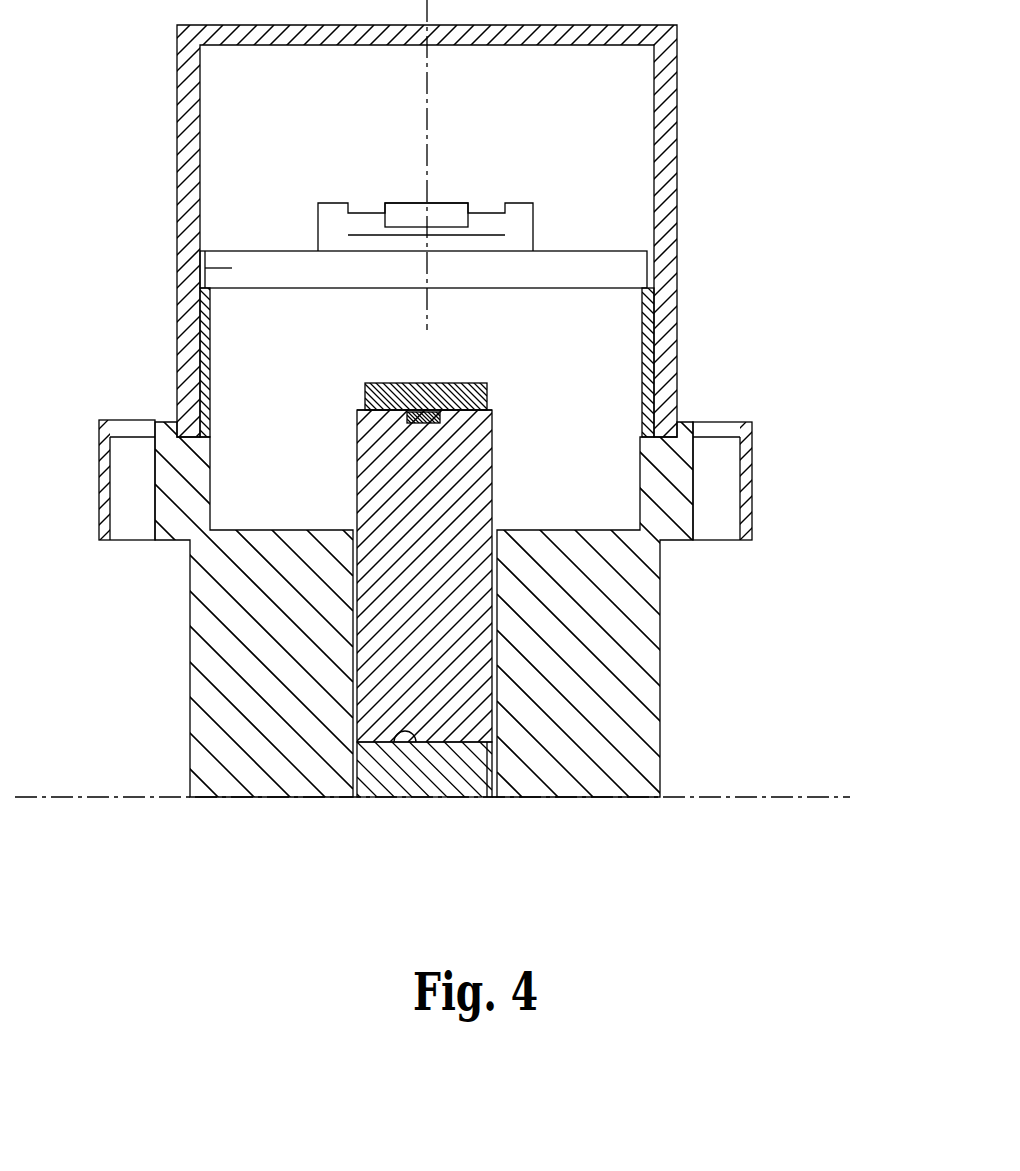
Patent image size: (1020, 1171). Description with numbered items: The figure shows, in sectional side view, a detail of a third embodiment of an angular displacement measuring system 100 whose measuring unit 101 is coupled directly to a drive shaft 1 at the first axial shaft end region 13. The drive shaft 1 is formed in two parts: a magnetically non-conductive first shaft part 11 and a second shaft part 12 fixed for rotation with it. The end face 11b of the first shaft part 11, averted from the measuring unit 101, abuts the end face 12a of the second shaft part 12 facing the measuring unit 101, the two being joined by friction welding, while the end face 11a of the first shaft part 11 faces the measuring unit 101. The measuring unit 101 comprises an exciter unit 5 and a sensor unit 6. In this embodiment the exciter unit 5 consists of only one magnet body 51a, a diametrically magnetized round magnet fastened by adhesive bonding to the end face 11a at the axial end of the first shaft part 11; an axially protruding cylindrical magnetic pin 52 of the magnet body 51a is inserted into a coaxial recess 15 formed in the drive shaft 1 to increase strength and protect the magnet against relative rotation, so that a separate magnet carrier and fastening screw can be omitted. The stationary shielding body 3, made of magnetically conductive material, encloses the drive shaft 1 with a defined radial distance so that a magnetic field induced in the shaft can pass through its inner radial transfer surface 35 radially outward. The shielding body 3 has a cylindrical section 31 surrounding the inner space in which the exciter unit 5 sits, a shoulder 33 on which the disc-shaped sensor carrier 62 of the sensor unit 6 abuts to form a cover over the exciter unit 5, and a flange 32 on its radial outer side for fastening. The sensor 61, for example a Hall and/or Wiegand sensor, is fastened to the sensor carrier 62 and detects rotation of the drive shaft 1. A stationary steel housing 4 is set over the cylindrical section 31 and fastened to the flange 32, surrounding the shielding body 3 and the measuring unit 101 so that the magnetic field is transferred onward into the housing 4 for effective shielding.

The angular displacement measuring system 100 is at (793, 183).
The measuring unit 101 is at (262, 100).
The drive shaft 1 is at (437, 415).
The shielding body 3 is at (612, 627).
The housing 4 is at (657, 203).
The exciter unit 5 is at (453, 363).
The sensor unit 6 is at (380, 170).
The first shaft part 11 is at (362, 583).
The end face 11a is at (487, 390).
The end face 11b is at (490, 772).
The second shaft part 12 is at (385, 775).
The end face 12a is at (413, 742).
The first axial shaft end region 13 is at (514, 525).
The coaxial recess 15 is at (330, 740).
The cylindrical section 31 is at (660, 320).
The flange 32 is at (752, 481).
The shoulder 33 is at (655, 265).
The inner radial transfer surface 35 is at (495, 758).
The magnet body 51a is at (407, 393).
The magnetic pin 52 is at (407, 423).
The sensor 61 is at (438, 205).
The sensor carrier 62 is at (232, 268).